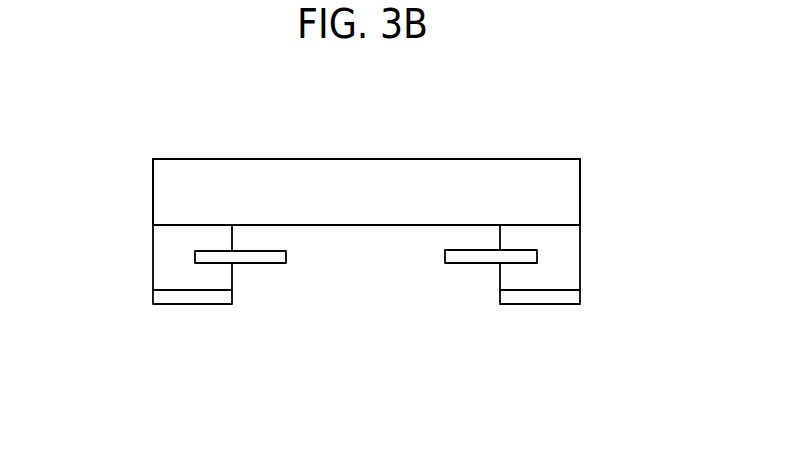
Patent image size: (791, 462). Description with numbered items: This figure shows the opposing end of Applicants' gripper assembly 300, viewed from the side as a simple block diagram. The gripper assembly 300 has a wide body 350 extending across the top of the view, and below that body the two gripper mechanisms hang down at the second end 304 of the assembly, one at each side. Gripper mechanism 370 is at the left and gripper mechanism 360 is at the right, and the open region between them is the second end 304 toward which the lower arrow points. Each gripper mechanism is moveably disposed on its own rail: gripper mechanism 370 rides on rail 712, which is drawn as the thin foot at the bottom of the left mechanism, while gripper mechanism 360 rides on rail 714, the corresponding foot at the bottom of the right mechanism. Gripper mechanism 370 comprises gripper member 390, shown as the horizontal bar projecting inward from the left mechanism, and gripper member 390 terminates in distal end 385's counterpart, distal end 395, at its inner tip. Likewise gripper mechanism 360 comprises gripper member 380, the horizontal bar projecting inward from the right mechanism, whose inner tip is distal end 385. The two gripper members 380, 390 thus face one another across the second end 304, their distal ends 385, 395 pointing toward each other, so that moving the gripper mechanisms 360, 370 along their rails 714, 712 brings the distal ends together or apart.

The gripper assembly 300 is at (597, 137).
The substrate / cap body 350 is at (383, 203).
The gripper mechanism 360 is at (595, 268).
The gripper mechanism 370 is at (138, 268).
The gripper member 380 is at (480, 268).
The distal end 385 is at (458, 255).
The gripper member 390 is at (256, 268).
The distal end 395 is at (272, 258).
The rail 712 is at (200, 297).
The rail 714 is at (538, 297).
The second end 304 is at (353, 345).